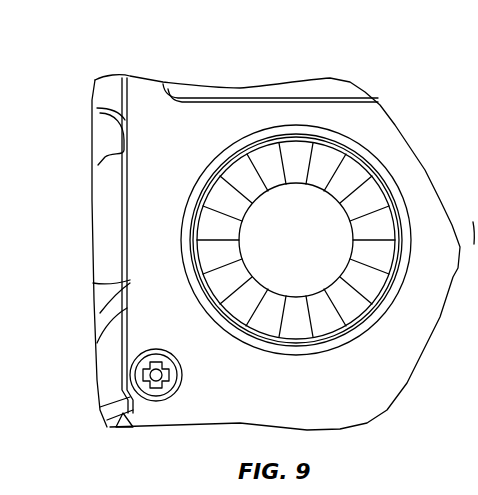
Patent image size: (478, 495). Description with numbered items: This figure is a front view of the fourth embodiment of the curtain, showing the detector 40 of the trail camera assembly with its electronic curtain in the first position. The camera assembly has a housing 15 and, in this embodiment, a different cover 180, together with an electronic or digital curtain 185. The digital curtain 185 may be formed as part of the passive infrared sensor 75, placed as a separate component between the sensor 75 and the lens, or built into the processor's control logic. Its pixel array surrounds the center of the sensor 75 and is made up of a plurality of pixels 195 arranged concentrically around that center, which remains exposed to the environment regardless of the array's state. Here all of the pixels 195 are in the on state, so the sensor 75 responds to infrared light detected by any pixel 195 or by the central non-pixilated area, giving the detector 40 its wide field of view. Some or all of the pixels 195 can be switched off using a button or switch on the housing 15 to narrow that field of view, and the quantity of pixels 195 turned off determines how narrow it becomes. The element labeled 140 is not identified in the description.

The housing 15 is at (90, 200).
The detector 40 is at (361, 118).
The passive infrared sensor 75 is at (262, 277).
The annular ring 140 is at (340, 330).
The cover 180 is at (133, 117).
The digital curtain 185 is at (300, 137).
The pixels 195 is at (218, 197).